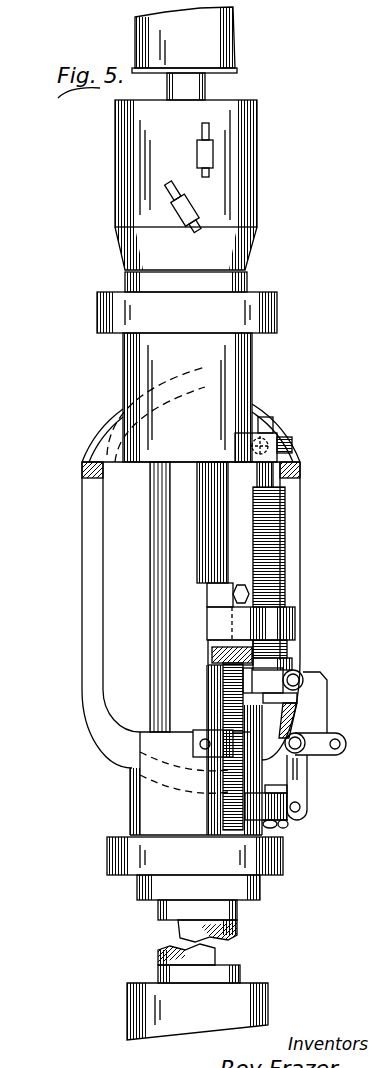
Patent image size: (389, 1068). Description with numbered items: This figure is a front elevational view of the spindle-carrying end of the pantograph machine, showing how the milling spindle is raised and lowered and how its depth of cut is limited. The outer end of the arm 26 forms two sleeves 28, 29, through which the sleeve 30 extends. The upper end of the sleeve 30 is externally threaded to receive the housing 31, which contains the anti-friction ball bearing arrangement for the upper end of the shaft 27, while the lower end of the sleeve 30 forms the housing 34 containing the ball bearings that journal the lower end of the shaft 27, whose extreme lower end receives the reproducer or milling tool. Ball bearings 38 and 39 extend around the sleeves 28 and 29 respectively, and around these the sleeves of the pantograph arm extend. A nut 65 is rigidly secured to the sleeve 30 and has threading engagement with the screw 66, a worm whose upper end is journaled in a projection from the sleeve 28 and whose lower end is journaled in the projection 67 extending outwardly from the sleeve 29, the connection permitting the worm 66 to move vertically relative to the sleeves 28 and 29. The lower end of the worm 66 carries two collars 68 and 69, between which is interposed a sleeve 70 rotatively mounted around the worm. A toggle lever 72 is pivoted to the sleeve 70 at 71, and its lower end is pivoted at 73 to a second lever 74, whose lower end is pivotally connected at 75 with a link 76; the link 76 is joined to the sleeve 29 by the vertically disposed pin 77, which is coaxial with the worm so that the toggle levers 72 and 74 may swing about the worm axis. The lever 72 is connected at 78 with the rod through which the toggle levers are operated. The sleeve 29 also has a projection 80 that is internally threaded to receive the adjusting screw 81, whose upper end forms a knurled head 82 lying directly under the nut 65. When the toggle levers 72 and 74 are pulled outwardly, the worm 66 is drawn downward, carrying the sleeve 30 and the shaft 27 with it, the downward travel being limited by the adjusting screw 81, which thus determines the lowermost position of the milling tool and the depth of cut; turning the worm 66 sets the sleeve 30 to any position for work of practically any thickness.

The arm 26 is at (84, 522).
The shaft 27 is at (175, 928).
The sleeve 28 is at (252, 356).
The sleeve 29 is at (173, 783).
The sleeve 30 is at (150, 547).
The housing 31 is at (245, 226).
The housing 34 is at (130, 985).
The ball bearing 38 is at (277, 333).
The ball bearing 39 is at (110, 876).
The nut 65 is at (295, 606).
The screw 66 is at (285, 560).
The projection 67 is at (300, 713).
The collar 68 is at (292, 662).
The collar 69 is at (297, 697).
The sleeve 70 is at (242, 683).
The pivot 71 is at (303, 676).
The toggle lever 72 is at (323, 686).
The pivot 73 is at (300, 752).
The second lever 74 is at (308, 790).
The pivot 75 is at (301, 808).
The link 76 is at (292, 822).
The pin 77 is at (277, 827).
The connection 78 is at (338, 750).
The projection 80 is at (215, 758).
The adjusting screw 81 is at (230, 707).
The knurled head 82 is at (212, 660).